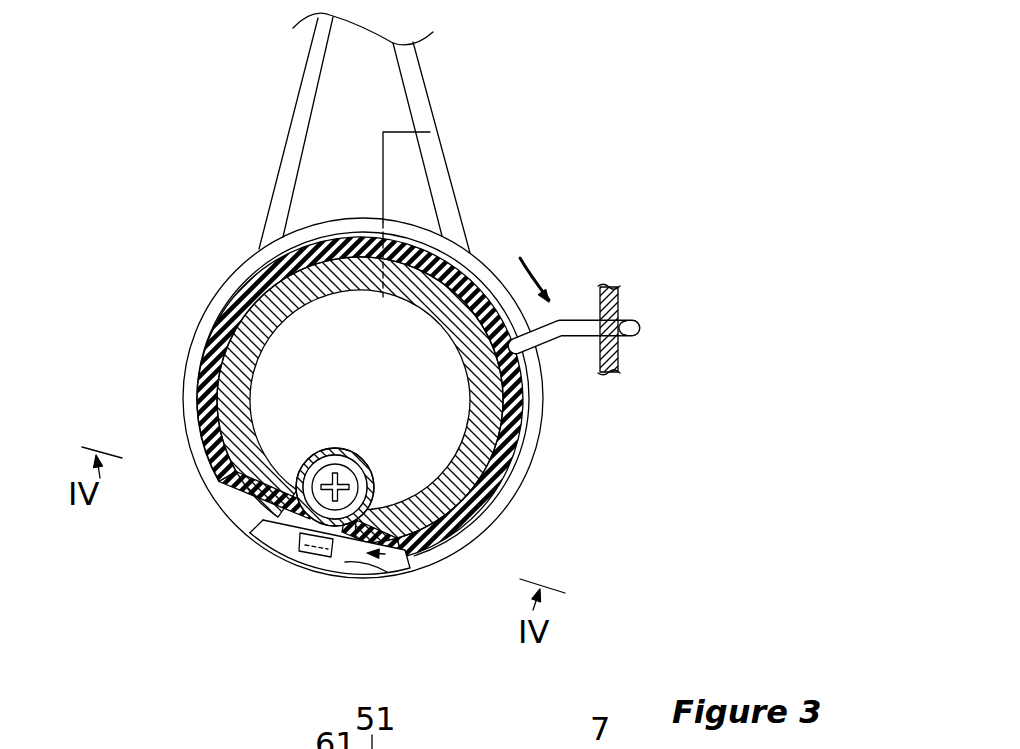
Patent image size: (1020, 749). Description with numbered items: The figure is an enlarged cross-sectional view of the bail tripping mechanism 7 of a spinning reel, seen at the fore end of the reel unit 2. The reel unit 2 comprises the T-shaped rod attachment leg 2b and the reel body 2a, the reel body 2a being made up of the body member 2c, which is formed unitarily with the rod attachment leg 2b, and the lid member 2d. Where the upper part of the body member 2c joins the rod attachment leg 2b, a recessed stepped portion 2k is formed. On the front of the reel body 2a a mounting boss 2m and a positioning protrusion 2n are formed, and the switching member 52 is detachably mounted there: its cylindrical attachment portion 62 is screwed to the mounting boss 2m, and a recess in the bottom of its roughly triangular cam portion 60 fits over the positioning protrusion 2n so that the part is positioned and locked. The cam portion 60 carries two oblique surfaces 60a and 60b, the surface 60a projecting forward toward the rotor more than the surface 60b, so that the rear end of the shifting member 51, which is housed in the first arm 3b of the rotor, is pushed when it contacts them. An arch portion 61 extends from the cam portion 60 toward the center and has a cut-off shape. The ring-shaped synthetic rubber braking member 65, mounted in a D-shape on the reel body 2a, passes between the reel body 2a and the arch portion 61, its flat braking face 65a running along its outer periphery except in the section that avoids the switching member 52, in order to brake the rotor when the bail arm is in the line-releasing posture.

The reel unit 2 is at (497, 147).
The reel body 2a is at (182, 237).
The rod attachment leg 2b is at (420, 78).
The body member 2c is at (270, 194).
The lid member 2d is at (458, 205).
The stepped portion 2k is at (420, 122).
The mounting boss 2m is at (333, 447).
The positioning protrusion 2n is at (305, 553).
The first arm 3b is at (618, 362).
The bail tripping mechanism 7 is at (522, 248).
The shifting member 51 is at (635, 322).
The switching member 52 is at (400, 565).
The cam portion 60 is at (332, 571).
The oblique surface 60a is at (358, 567).
The oblique surface 60b is at (280, 532).
The arch portion 61 is at (322, 457).
The attachment portion 62 is at (370, 462).
The braking member 65 is at (197, 360).
The braking face 65a is at (520, 437).